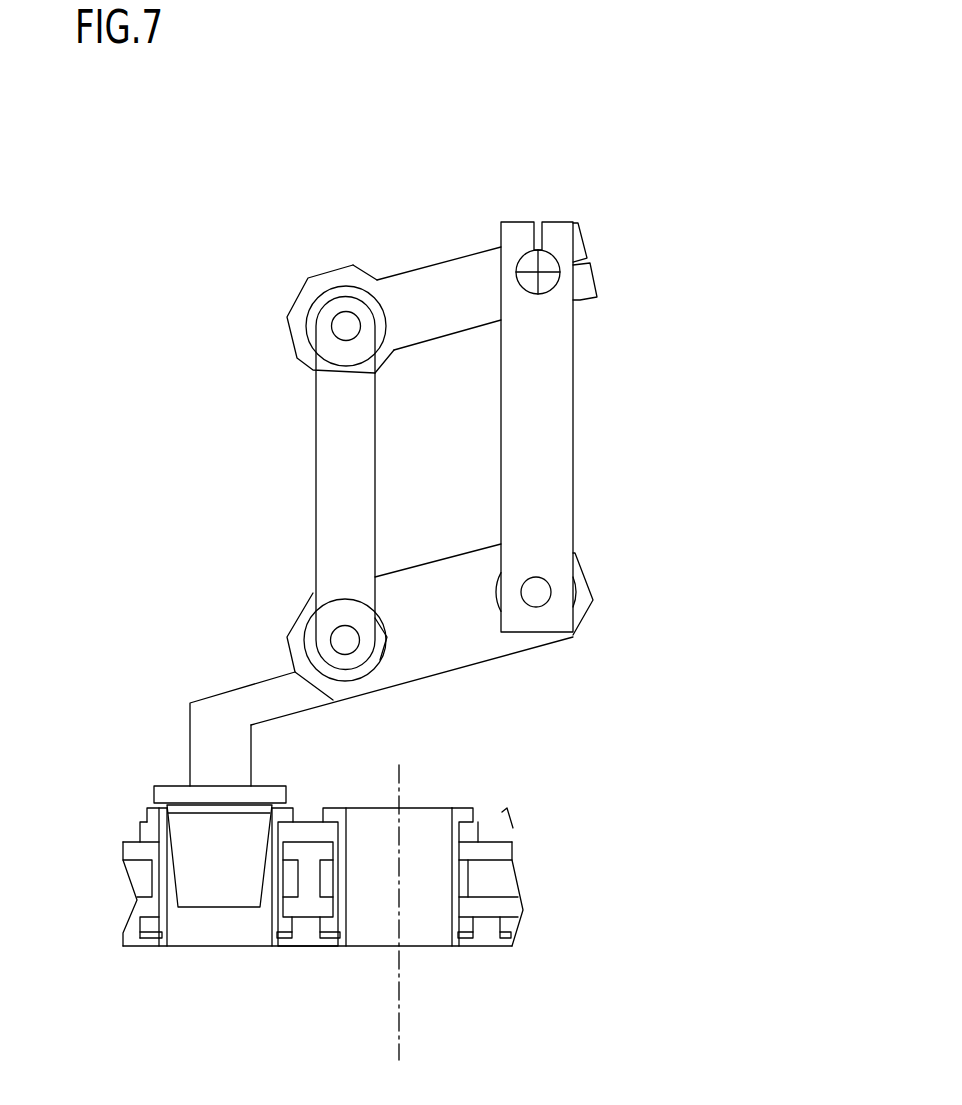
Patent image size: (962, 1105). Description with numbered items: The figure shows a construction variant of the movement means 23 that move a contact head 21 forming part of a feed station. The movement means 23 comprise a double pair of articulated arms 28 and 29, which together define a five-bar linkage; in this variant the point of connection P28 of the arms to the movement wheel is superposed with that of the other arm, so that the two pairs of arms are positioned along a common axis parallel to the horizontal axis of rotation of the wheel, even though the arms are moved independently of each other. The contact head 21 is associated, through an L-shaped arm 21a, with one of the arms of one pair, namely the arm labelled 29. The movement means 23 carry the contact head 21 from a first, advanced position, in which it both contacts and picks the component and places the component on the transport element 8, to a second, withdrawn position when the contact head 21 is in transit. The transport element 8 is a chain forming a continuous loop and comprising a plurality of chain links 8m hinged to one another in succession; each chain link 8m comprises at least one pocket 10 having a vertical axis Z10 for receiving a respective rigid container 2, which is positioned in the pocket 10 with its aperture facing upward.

The articulated arm 28 is at (302, 468).
The articulated arm 29 is at (582, 355).
The point of connection P28 is at (538, 272).
The movement means 23 is at (582, 464).
The arm 21a is at (223, 708).
The contact head 21 is at (162, 795).
The rigid container 2 is at (230, 878).
The transport element 8 is at (557, 912).
The pocket 10 is at (422, 828).
The chain link 8m is at (307, 922).
The vertical axis Z10 is at (399, 992).